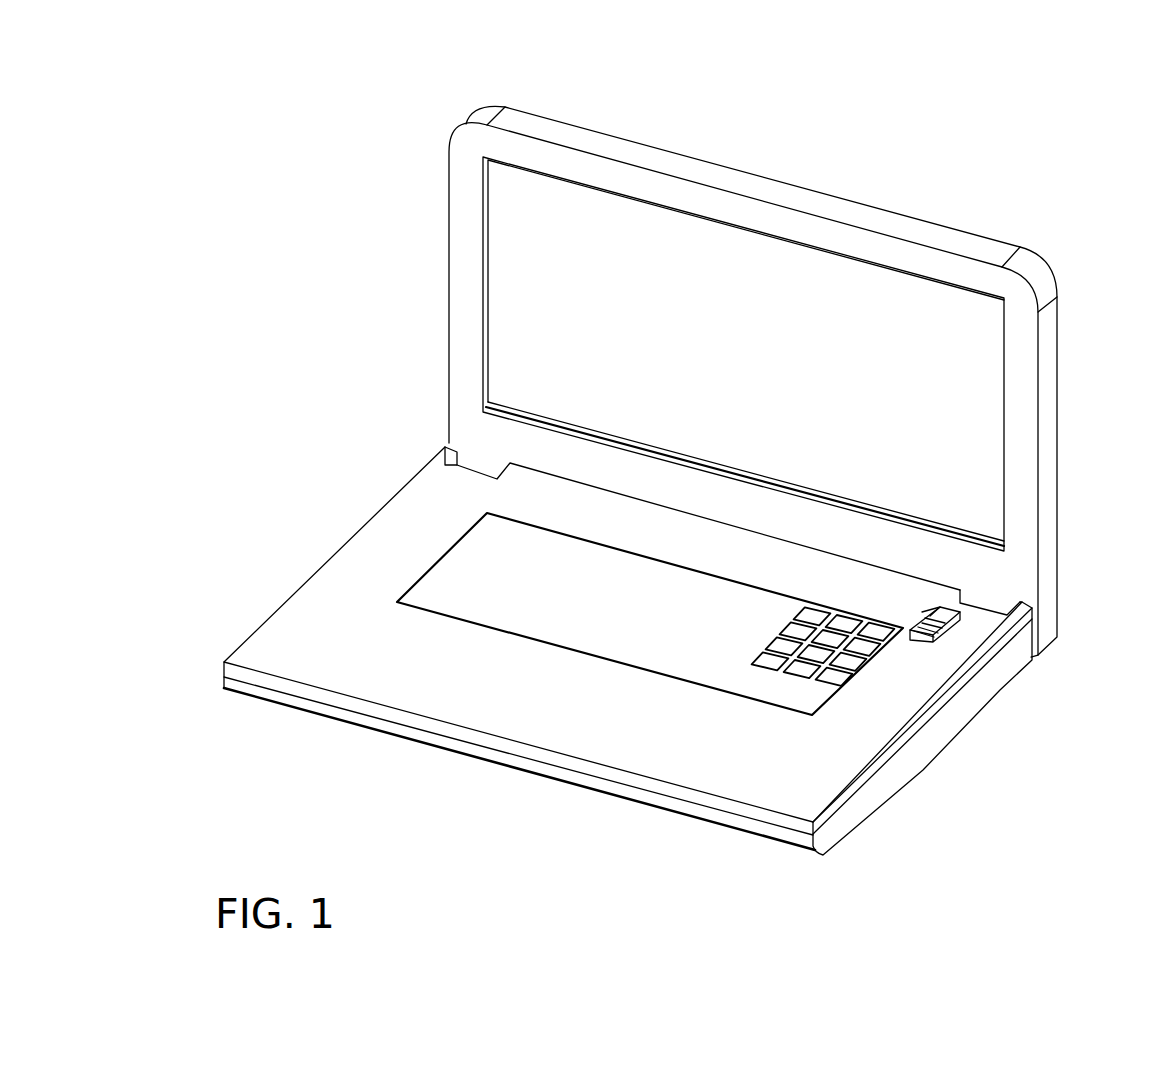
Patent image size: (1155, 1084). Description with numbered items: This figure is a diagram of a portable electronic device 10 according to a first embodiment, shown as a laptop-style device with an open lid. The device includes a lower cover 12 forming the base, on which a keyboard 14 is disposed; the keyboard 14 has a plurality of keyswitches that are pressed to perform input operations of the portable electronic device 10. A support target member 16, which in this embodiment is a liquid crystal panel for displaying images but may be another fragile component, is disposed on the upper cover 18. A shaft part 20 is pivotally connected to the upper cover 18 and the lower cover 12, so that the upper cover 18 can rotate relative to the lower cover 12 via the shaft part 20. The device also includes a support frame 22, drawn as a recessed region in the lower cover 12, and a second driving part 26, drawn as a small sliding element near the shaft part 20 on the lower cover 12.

The portable electronic device 10 is at (1008, 190).
The lower cover 12 is at (845, 755).
The keyboard 14 is at (818, 652).
The support target member 16 is at (968, 443).
The upper cover 18 is at (1047, 388).
The shaft part 20 is at (977, 602).
The support frame 22 is at (602, 610).
The second driving part 26 is at (947, 636).